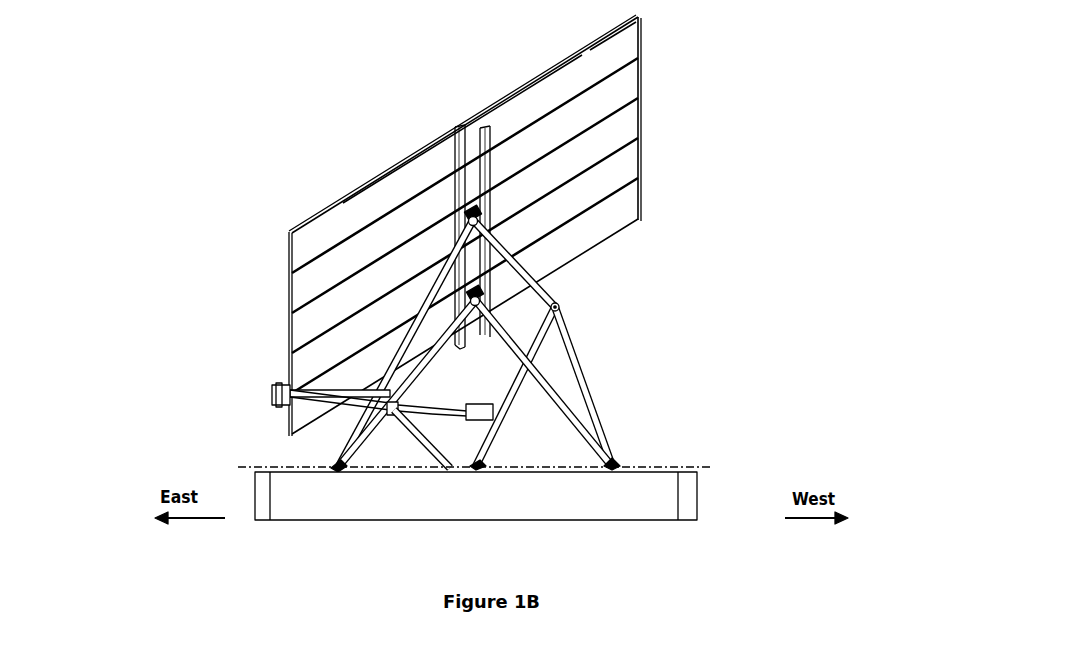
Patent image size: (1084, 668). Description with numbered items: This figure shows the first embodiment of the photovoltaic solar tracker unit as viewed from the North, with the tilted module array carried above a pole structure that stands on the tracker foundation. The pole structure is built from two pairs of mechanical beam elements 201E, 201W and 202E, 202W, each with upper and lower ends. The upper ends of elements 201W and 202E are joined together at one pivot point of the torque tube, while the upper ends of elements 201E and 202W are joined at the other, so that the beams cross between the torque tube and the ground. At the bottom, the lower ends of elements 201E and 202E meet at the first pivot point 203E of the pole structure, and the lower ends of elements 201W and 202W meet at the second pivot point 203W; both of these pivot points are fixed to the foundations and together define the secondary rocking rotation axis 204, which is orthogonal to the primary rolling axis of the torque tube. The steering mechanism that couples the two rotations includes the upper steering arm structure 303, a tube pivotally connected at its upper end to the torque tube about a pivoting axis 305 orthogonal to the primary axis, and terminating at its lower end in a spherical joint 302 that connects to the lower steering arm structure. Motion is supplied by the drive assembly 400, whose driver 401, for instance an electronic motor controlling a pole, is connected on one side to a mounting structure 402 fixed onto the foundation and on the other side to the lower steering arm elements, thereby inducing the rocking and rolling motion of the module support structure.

The mechanical beam element 201E is at (403, 330).
The mechanical beam element 201W is at (537, 377).
The mechanical beam element 202E is at (390, 368).
The mechanical beam element 202W is at (577, 395).
The first pivot point of the pole structure 203E is at (340, 470).
The second pivot point of the pole structure 203W is at (613, 470).
The secondary rocking rotation axis 204 is at (710, 466).
The spherical joint 302 is at (560, 305).
The upper steering arm structure 303 is at (523, 267).
The pivoting axis 305 is at (483, 203).
The drive assembly 400 is at (133, 423).
The driver 401 is at (272, 393).
The mounting structure 402 is at (417, 452).